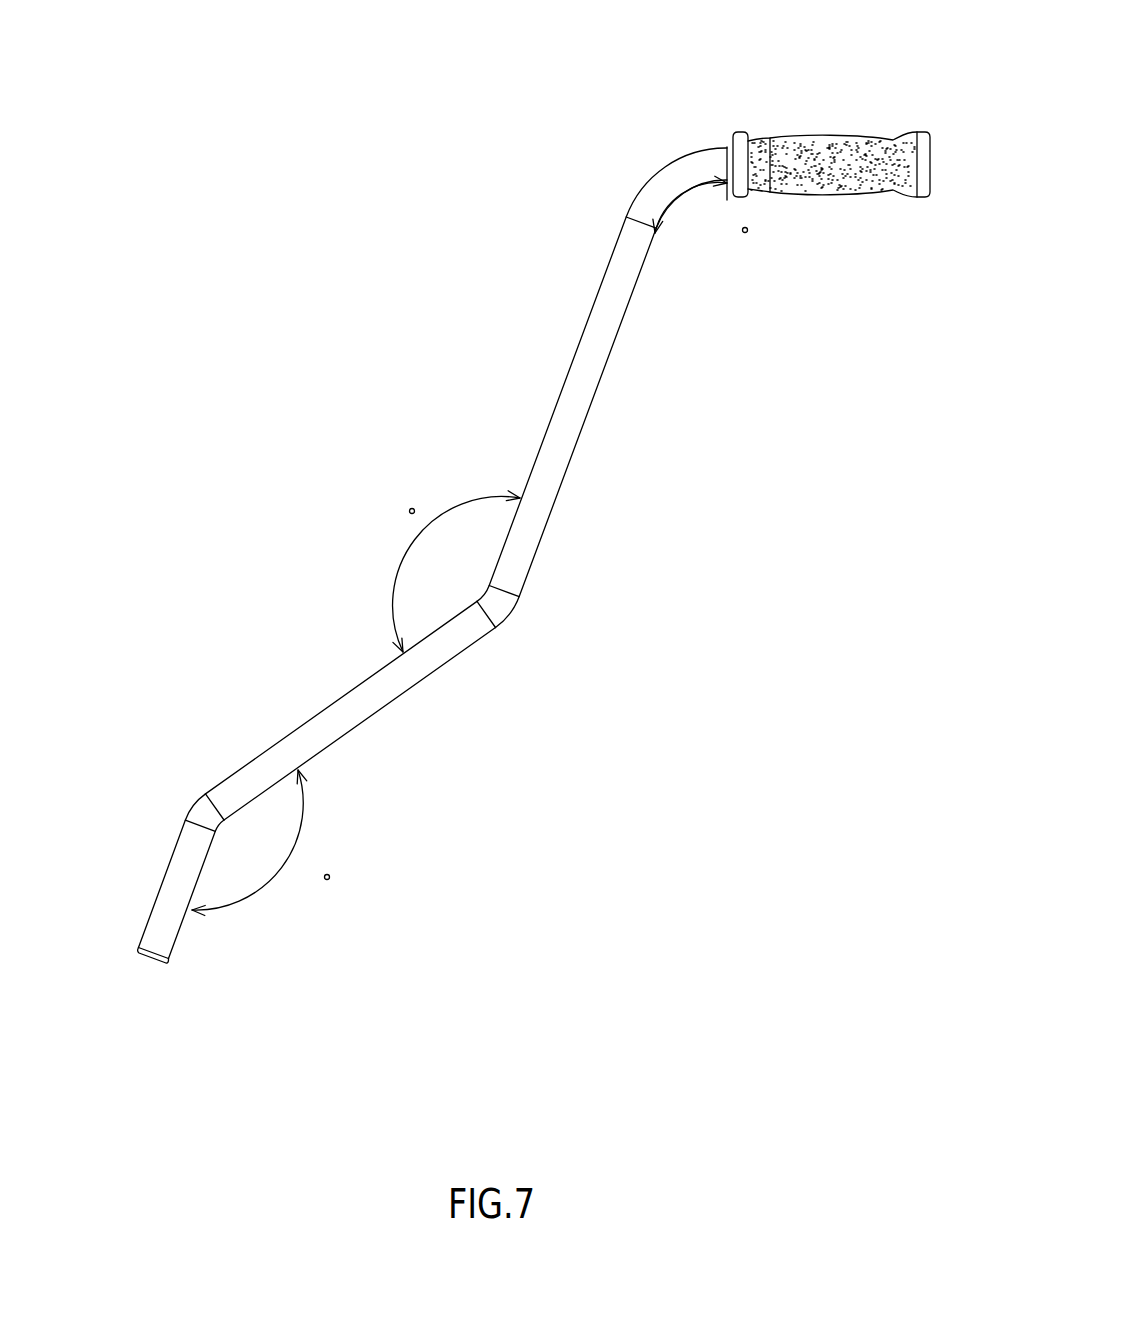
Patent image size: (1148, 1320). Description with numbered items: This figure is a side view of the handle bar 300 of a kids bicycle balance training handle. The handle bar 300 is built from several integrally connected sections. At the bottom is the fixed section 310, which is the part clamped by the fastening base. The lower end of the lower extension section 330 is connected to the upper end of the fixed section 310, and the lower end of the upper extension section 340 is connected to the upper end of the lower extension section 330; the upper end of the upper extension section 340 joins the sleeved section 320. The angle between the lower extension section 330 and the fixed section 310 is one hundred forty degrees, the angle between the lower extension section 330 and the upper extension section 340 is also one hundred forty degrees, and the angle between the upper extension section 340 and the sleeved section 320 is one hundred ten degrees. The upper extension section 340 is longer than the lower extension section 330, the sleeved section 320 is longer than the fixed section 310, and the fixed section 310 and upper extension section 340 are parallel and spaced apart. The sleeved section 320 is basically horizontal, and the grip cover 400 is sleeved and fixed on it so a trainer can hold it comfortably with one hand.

The handle bar 300 is at (482, 365).
The fixed section 310 is at (177, 870).
The sleeved section 320 is at (727, 147).
The lower extension section 330 is at (327, 722).
The upper extension section 340 is at (593, 375).
The grip cover 400 is at (818, 145).